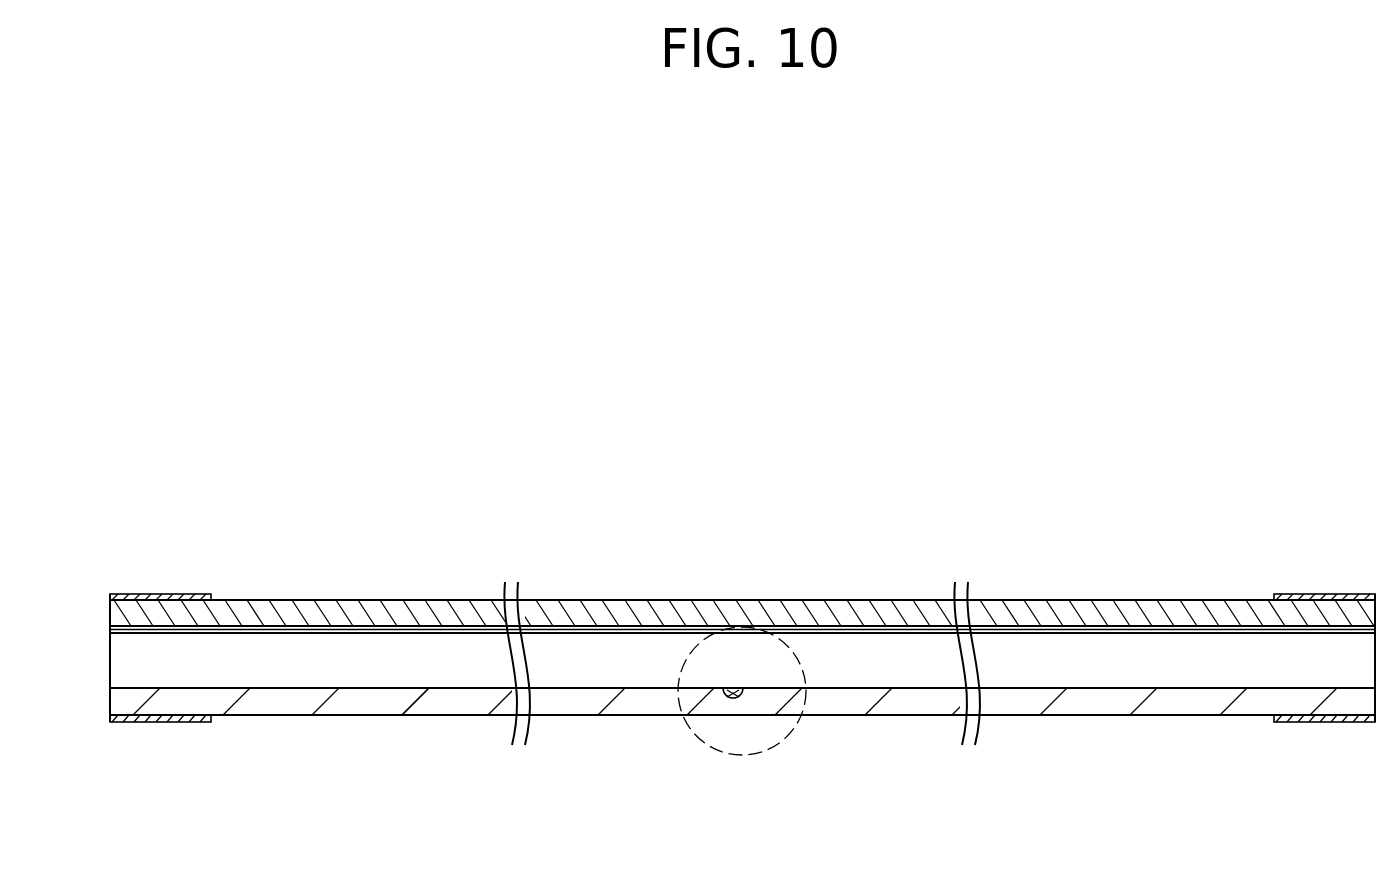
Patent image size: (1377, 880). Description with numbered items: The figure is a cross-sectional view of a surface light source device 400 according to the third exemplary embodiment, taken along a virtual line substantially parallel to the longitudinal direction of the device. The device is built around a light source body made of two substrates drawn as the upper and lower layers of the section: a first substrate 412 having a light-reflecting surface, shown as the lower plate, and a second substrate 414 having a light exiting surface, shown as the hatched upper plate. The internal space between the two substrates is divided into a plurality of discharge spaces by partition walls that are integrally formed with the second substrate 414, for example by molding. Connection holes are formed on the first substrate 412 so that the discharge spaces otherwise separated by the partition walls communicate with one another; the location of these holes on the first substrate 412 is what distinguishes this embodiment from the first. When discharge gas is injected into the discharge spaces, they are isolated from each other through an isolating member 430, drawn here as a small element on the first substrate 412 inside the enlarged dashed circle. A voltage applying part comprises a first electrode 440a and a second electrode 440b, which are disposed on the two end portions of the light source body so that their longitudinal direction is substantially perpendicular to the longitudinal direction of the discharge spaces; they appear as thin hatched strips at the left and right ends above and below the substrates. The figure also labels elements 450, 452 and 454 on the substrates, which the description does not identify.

The surface light source device 400 is at (706, 238).
The first substrate 412 is at (237, 720).
The second substrate 414 is at (265, 606).
The isolating member 430 is at (740, 697).
The first electrode 440a is at (160, 594).
The second electrode 440b is at (1312, 592).
The electrode pattern 450 is at (326, 701).
The conductive line 452 is at (418, 699).
The transparent electrode layer 454 is at (370, 633).